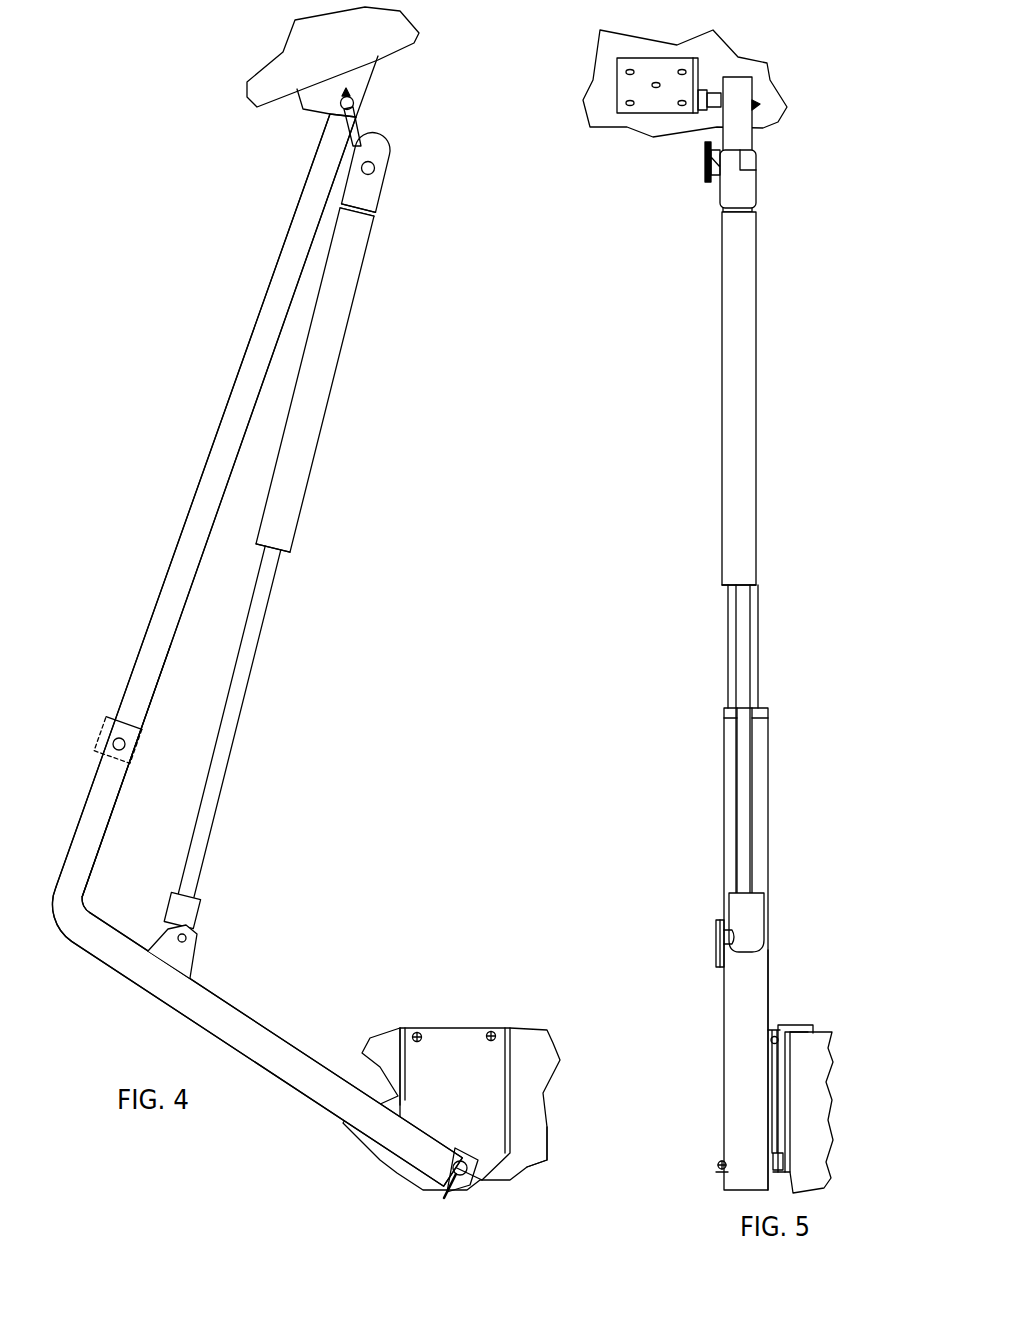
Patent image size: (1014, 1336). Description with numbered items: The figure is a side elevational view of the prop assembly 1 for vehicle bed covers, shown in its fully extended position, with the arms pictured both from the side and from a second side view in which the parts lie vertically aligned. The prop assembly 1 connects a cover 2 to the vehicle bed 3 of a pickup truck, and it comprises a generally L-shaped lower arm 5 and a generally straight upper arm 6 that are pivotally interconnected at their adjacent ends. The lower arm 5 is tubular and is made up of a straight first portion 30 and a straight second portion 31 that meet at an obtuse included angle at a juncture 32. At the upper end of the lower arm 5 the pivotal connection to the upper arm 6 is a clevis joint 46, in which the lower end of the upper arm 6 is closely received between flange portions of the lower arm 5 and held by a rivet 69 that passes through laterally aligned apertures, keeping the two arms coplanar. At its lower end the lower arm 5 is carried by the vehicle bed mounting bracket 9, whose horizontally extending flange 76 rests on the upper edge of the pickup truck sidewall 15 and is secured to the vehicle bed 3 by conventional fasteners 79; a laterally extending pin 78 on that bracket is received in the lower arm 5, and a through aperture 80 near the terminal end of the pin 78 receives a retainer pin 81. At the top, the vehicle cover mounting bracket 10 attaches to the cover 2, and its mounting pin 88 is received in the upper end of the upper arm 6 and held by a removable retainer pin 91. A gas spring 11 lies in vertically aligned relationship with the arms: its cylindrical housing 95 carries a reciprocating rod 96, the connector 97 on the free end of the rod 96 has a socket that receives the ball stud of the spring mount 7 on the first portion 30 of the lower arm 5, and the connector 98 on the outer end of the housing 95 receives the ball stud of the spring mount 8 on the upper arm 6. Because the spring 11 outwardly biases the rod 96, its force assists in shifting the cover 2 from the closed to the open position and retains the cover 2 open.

In FIG. 4, the prop assembly 1 is at (97, 998).
In FIG. 4, the cover 2 is at (255, 46).
In FIG. 5, the cover 2 is at (735, 38).
In FIG. 4, the vehicle bed 3 is at (545, 1030).
In FIG. 5, the vehicle bed 3 is at (829, 1091).
In FIG. 4, the lower arm 5 is at (64, 866).
In FIG. 5, the lower arm 5 is at (735, 1052).
In FIG. 4, the upper arm 6 is at (274, 272).
In FIG. 5, the upper arm 6 is at (728, 632).
In FIG. 4, the spring mount 7 is at (197, 960).
In FIG. 5, the spring mount 7 is at (716, 950).
In FIG. 4, the spring mount 8 is at (384, 152).
In FIG. 5, the spring mount 8 is at (706, 164).
In FIG. 4, the vehicle bed mounting bracket 9 is at (405, 1028).
In FIG. 5, the vehicle bed mounting bracket 9 is at (805, 1025).
In FIG. 4, the vehicle cover mounting bracket 10 is at (303, 112).
In FIG. 5, the vehicle cover mounting bracket 10 is at (615, 66).
In FIG. 4, the spring 11 is at (287, 555).
In FIG. 5, the spring 11 is at (757, 587).
In FIG. 4, the pickup truck sidewall 15 is at (530, 1158).
In FIG. 4, the first portion 30 is at (220, 1022).
In FIG. 5, the first portion 30 is at (760, 993).
In FIG. 4, the second portion 31 is at (108, 797).
In FIG. 4, the juncture 32 is at (88, 918).
In FIG. 4, the clevis joint 46 is at (104, 718).
In FIG. 4, the rivet 69 is at (125, 750).
In FIG. 4, the horizontally extending flange 76 is at (468, 1028).
In FIG. 4, the pin 78 is at (462, 1190).
In FIG. 5, the pin 78 is at (718, 1175).
In FIG. 4, the fasteners 79 is at (487, 1040).
In FIG. 5, the fasteners 79 is at (772, 1038).
In FIG. 5, the through aperture 80 is at (718, 1163).
In FIG. 4, the retainer pin 81 is at (467, 1150).
In FIG. 4, the mounting pin 88 is at (354, 98).
In FIG. 5, the mounting pin 88 is at (760, 95).
In FIG. 4, the retainer pin 91 is at (358, 120).
In FIG. 5, the retainer pin 91 is at (758, 115).
In FIG. 4, the cylindrical housing 95 is at (340, 338).
In FIG. 5, the cylindrical housing 95 is at (745, 335).
In FIG. 4, the rod 96 is at (246, 694).
In FIG. 5, the rod 96 is at (745, 693).
In FIG. 4, the connector 97 is at (201, 908).
In FIG. 5, the connector 97 is at (758, 922).
In FIG. 4, the connector 98 is at (377, 210).
In FIG. 5, the connector 98 is at (745, 193).